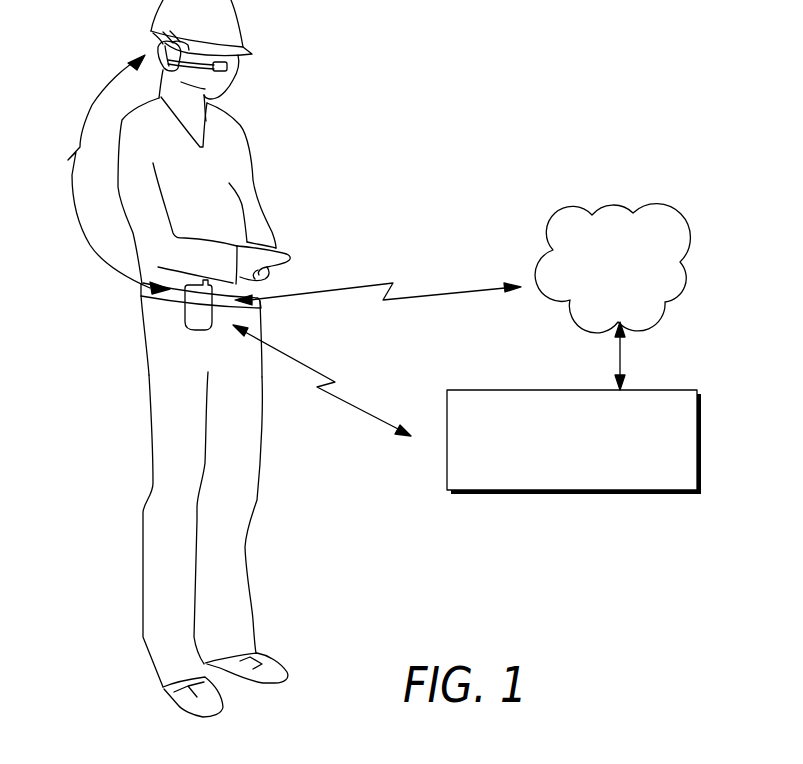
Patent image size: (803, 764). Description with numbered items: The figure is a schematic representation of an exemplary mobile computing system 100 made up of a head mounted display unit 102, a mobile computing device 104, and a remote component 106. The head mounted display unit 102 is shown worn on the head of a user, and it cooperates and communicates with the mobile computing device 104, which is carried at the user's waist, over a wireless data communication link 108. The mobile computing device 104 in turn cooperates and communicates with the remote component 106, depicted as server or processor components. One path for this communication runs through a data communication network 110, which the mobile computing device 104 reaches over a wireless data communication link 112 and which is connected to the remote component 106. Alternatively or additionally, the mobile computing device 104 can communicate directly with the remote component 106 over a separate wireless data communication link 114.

The mobile computing system 100 is at (436, 58).
The head mounted display unit 102 is at (157, 47).
The mobile computing device 104 is at (187, 331).
The remote component 106 is at (502, 390).
The wireless data communication link 108 is at (80, 127).
The data communication network 110 is at (609, 210).
The wireless data communication link 112 is at (453, 291).
The wireless data communication link 114 is at (302, 361).